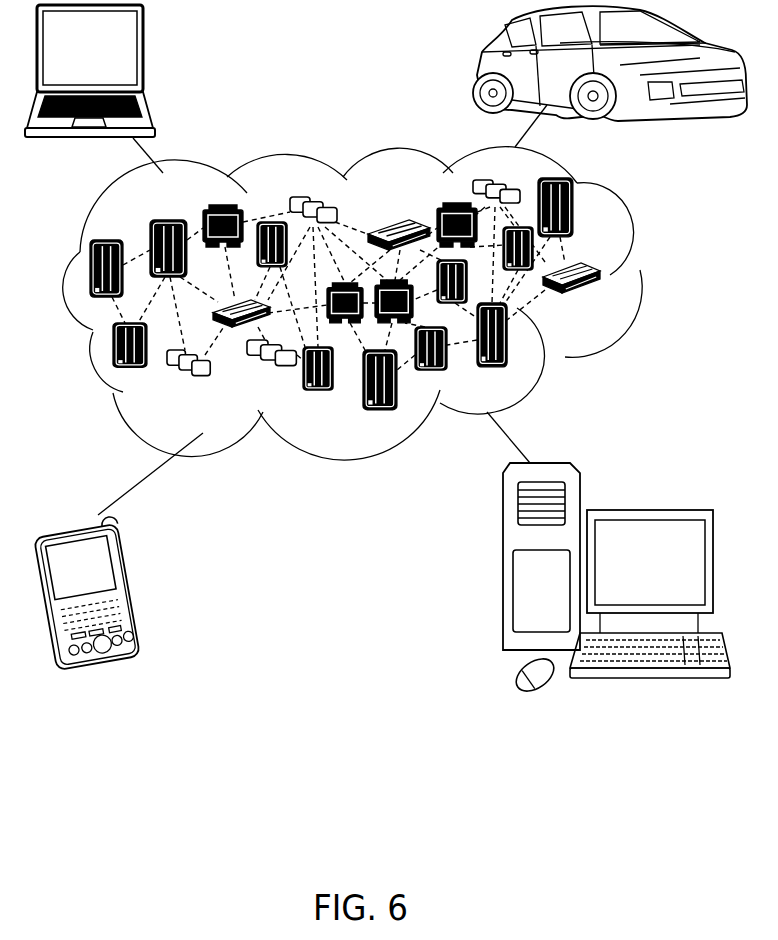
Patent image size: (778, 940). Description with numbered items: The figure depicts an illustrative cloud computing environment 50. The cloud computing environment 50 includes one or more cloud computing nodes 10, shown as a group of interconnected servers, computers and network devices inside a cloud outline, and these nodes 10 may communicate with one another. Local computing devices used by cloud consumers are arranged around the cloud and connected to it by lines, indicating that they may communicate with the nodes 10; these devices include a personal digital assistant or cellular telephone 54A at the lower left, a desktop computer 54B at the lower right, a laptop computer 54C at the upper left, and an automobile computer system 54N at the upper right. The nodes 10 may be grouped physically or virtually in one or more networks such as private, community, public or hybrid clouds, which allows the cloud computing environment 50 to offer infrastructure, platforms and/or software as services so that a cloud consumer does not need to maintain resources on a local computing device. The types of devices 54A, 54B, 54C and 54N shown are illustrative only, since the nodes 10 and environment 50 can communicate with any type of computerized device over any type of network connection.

The cloud computing node 10 is at (667, 266).
The cloud computing environment 50 is at (379, 303).
The personal digital assistant or cellular telephone 54A is at (133, 588).
The desktop computer 54B is at (647, 509).
The laptop computer 54C is at (145, 56).
The automobile computer system 54N is at (483, 71).